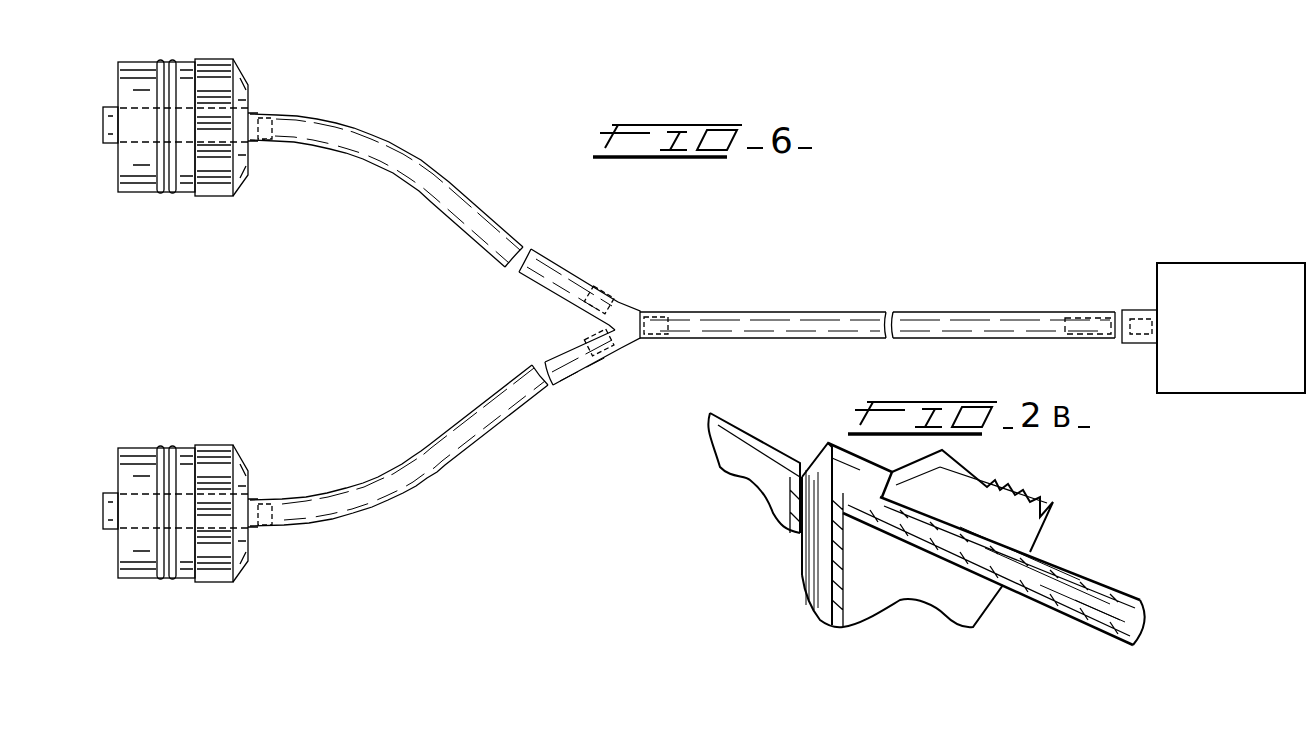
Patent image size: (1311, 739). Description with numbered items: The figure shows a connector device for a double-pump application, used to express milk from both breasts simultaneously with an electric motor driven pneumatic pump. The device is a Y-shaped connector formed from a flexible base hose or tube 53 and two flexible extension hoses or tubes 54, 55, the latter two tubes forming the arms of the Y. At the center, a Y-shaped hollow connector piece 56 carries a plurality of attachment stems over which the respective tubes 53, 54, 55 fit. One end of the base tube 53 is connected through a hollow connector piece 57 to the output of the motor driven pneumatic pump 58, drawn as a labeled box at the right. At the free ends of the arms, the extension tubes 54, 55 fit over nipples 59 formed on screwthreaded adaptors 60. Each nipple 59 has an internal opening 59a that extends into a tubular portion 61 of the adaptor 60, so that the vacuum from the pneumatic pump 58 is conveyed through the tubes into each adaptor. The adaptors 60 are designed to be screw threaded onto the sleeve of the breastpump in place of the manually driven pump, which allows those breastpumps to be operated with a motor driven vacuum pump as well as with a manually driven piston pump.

The base tube 53 is at (828, 312).
The extension tube 54 is at (445, 178).
The extension tube 55 is at (453, 428).
The Y-shaped hollow connector piece 56 is at (628, 318).
The hollow connector piece 57 is at (1122, 312).
The pneumatic pump 58 is at (1212, 263).
The nipple 59 is at (262, 113).
The internal opening 59a is at (267, 134).
The screwthreaded adaptor 60 is at (197, 62).
The tubular portion 61 is at (136, 145).